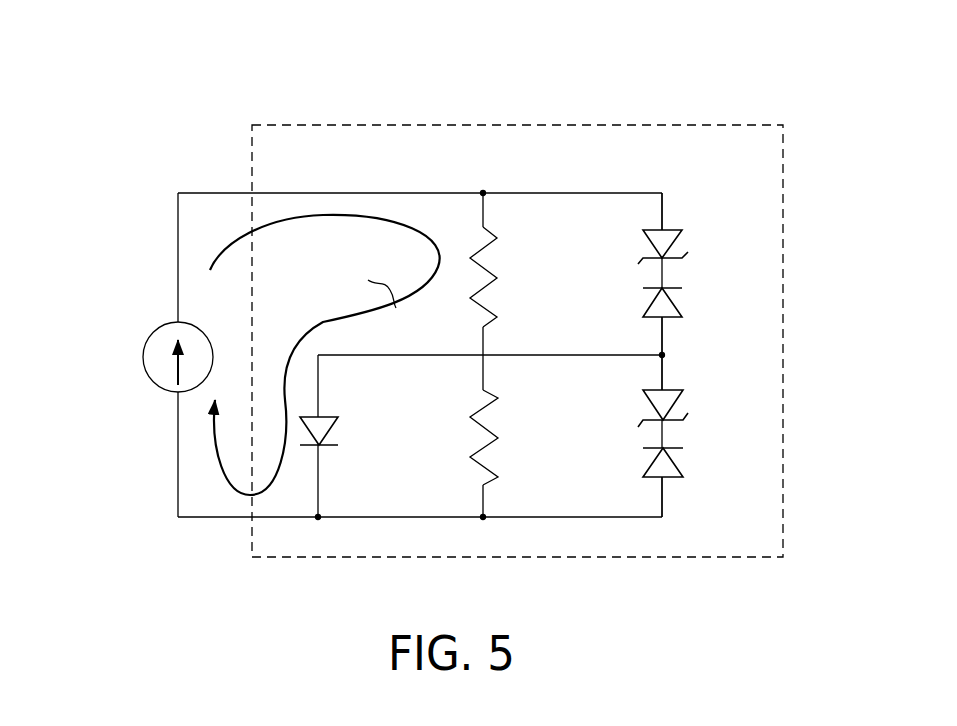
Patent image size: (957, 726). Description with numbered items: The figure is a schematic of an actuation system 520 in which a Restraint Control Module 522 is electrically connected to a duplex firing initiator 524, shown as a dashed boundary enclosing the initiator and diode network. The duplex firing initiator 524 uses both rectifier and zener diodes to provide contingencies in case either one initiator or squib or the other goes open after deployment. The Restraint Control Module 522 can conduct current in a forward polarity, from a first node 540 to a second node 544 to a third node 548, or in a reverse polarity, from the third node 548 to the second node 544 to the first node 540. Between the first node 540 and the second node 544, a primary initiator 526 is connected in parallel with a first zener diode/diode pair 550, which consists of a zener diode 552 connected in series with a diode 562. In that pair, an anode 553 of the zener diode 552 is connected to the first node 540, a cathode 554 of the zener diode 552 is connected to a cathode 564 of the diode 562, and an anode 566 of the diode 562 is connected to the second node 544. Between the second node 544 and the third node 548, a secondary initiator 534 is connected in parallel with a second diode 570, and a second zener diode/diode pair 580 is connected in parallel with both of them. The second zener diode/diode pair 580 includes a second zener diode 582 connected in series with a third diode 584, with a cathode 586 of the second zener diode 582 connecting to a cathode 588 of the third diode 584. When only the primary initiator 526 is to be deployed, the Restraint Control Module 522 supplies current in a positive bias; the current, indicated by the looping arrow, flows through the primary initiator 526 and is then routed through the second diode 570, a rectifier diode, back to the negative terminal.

The actuation system 520 is at (168, 158).
The Restraint Control Module (RCM) 522 is at (162, 325).
The duplex firing initiator 524 is at (492, 124).
The primary initiator 526 is at (487, 267).
The secondary initiator 534 is at (480, 412).
The first node 540 is at (531, 188).
The second node 544 is at (527, 350).
The third node 548 is at (559, 512).
The first zener diode/diode pair 550 is at (717, 244).
The zener diode 552 is at (675, 233).
The anode of the zener diode 553 is at (664, 228).
The cathode of the zener diode 554 is at (640, 264).
The diode 562 is at (676, 318).
The cathode of the diode 564 is at (668, 283).
The anode of the diode 566 is at (655, 322).
The second diode 570 is at (328, 416).
The second zener diode/diode pair 580 is at (729, 433).
The second zener diode 582 is at (678, 390).
The third diode 584 is at (673, 478).
The cathode of the second zener diode 586 is at (640, 430).
The cathode of the third diode 588 is at (668, 441).